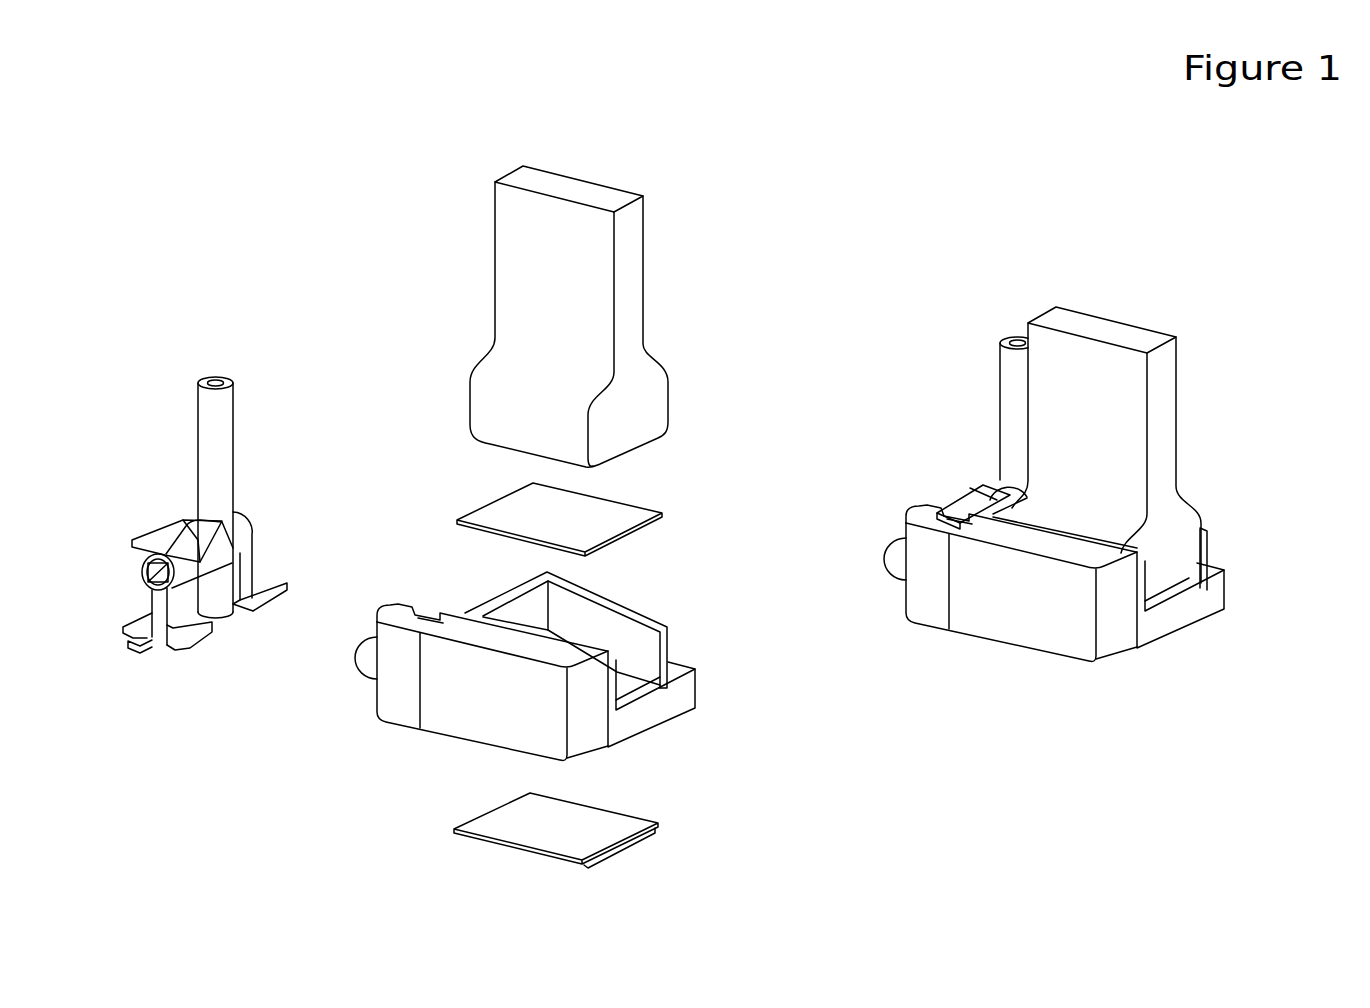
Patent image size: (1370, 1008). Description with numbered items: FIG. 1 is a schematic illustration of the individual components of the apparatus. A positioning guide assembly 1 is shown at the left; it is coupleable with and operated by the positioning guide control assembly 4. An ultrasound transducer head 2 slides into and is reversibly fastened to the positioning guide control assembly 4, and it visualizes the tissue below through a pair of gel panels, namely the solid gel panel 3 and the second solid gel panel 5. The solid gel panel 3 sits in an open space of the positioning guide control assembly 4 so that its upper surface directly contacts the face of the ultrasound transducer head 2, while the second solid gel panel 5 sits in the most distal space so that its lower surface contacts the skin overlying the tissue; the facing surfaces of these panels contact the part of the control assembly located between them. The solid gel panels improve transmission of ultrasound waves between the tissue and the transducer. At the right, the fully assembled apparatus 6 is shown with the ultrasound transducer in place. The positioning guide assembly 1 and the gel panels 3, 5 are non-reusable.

The positioning guide assembly 1 is at (205, 515).
The ultrasound transducer head 2 is at (600, 316).
The solid gel panel 3 is at (593, 519).
The positioning guide control assembly 4 is at (542, 666).
The second solid gel panel 5 is at (592, 830).
The fully assembled apparatus 6 is at (1054, 484).